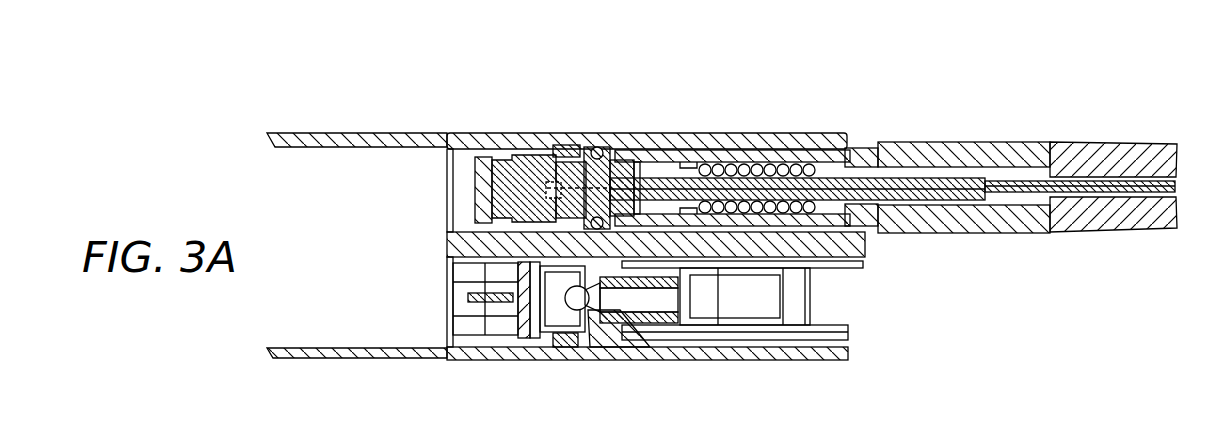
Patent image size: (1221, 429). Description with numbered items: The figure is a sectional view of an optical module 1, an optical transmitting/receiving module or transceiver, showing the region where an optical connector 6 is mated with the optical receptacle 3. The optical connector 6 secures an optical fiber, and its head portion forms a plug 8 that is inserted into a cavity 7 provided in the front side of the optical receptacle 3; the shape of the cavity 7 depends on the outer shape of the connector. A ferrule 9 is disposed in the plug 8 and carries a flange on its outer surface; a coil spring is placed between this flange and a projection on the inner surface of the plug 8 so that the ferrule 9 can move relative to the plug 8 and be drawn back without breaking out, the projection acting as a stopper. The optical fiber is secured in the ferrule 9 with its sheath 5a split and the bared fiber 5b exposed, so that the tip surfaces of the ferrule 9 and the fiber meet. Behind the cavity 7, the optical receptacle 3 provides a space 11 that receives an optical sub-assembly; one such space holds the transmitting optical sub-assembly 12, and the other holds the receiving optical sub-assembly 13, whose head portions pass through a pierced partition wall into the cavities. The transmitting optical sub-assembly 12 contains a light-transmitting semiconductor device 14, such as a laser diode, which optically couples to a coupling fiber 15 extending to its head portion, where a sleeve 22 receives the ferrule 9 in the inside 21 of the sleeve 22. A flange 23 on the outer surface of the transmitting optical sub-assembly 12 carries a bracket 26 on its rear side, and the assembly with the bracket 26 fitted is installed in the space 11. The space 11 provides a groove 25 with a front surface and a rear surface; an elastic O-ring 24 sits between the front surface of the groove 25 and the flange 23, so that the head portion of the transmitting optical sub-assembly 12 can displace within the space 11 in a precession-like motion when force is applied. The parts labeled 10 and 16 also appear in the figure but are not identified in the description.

The optical module 1 is at (378, 106).
The optical receptacle 3 is at (681, 138).
The sheath 5a is at (1020, 195).
The bared fiber 5b is at (722, 178).
The optical connector 6 is at (1042, 128).
The cavity 7 is at (825, 131).
The plug 8 is at (945, 160).
The ferrule 9 is at (712, 256).
The spring 10 is at (790, 164).
The space 11 is at (482, 134).
The transmitting optical sub-assembly 12 is at (484, 156).
The receiving optical sub-assembly 13 is at (610, 318).
The light-transmitting semiconductor device 14 is at (527, 134).
The coupling fiber 15 is at (571, 160).
The pusher 16 is at (553, 307).
The inside of the sleeve 21 is at (650, 228).
The sleeve 22 is at (692, 158).
The flange 23 is at (591, 162).
The O-ring 24 is at (618, 162).
The groove 25 is at (600, 149).
The bracket 26 is at (561, 146).